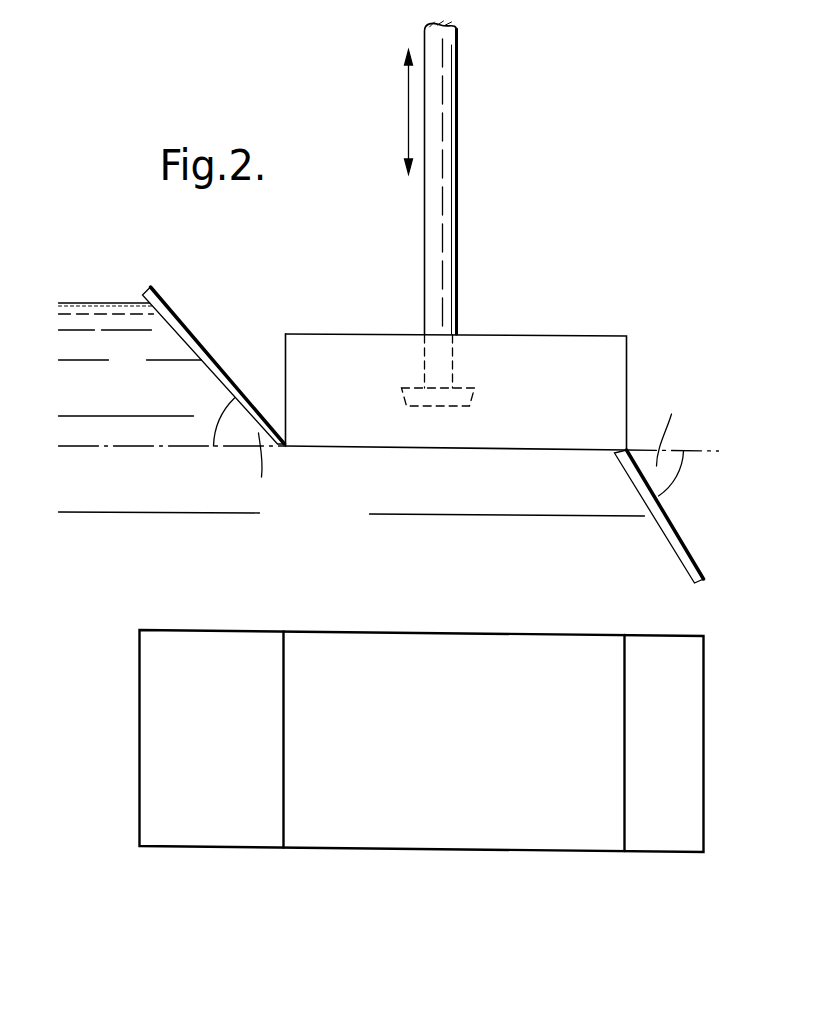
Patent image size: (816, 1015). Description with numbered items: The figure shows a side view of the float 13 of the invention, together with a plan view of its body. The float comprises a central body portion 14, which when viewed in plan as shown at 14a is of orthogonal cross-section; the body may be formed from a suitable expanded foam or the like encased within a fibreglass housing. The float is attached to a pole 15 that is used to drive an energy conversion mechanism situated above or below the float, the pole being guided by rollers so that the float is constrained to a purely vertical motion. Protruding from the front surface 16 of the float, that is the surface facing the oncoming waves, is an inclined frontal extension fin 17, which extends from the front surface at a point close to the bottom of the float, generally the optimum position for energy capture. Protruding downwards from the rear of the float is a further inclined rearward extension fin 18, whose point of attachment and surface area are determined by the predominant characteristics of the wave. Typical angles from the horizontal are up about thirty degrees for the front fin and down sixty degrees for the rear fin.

The float 13 is at (530, 273).
The central body portion 14 is at (385, 350).
The central body portion viewed in plan 14a is at (463, 762).
The pole 15 is at (443, 108).
The front surface 16 is at (284, 366).
The inclined frontal extension fin 17 is at (177, 333).
The inclined rearward extension fin 18 is at (672, 529).